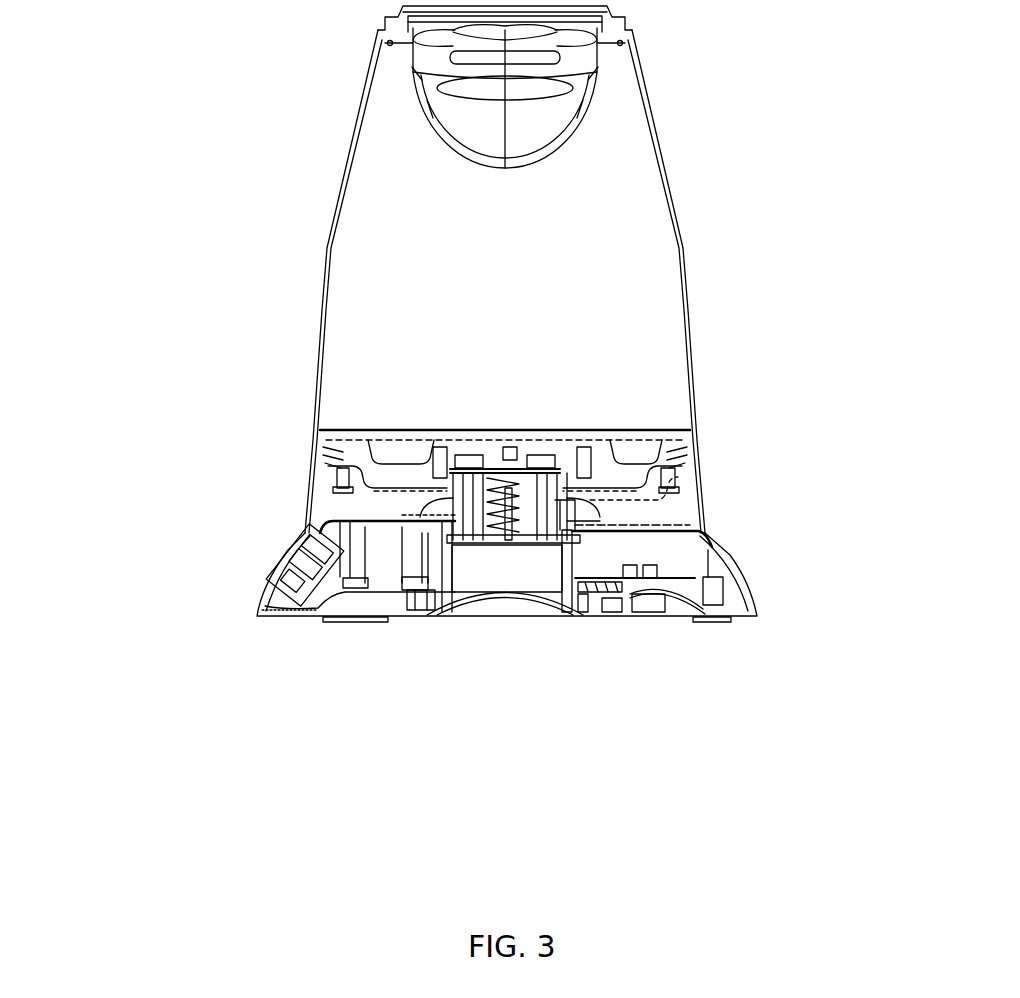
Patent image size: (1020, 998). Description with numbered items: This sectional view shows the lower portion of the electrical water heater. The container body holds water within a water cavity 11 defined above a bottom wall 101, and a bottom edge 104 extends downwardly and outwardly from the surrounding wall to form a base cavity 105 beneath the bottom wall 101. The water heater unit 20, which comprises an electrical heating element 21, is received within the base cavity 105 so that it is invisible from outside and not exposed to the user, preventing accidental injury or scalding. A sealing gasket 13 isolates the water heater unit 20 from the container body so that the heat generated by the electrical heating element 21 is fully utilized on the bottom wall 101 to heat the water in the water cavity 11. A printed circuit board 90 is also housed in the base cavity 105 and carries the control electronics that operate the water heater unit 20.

The water cavity 11 is at (565, 269).
The sealing gasket 13 is at (681, 220).
The water heater unit 20 is at (476, 523).
The electrical heating element 21 is at (387, 450).
The bottom wall 101 is at (647, 440).
The bottom edge 104 is at (740, 568).
The base cavity 105 is at (640, 548).
The printed circuit board 90 is at (310, 570).